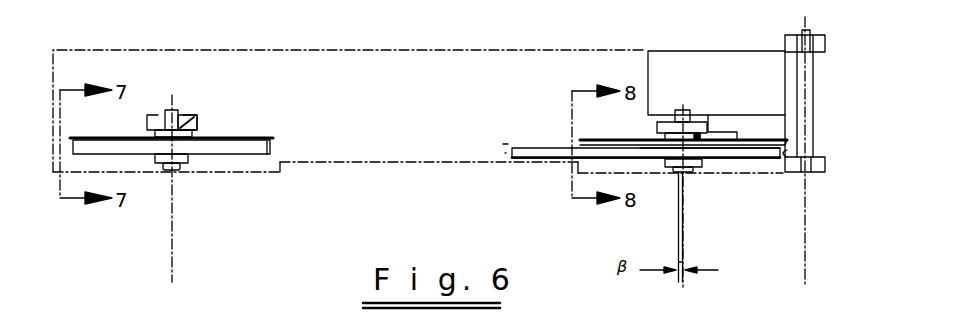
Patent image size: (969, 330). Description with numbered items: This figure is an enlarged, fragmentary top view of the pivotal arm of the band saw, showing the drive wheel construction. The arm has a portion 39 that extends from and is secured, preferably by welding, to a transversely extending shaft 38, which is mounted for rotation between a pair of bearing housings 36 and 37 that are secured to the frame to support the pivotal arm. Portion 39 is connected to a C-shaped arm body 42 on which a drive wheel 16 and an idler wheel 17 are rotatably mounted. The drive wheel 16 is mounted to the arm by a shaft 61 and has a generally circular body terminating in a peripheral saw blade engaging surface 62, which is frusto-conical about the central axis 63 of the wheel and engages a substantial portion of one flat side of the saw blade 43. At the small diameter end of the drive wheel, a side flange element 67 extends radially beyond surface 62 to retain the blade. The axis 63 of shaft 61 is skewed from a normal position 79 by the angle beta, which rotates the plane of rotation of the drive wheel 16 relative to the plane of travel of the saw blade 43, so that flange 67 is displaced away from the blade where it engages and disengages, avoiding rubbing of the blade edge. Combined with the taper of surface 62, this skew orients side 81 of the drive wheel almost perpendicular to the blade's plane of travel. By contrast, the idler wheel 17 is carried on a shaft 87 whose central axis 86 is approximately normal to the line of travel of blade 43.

The drive wheel 16 is at (772, 156).
The idler wheel 17 is at (250, 150).
The bearing housing 36 is at (826, 45).
The bearing housing 37 is at (828, 165).
The shaft 38 is at (811, 108).
The portion of arm 39 is at (766, 88).
The C-shaped arm body 42 is at (600, 49).
The saw blade 43 is at (525, 147).
The shaft 61 is at (697, 115).
The peripheral saw blade engaging surface 62 is at (715, 150).
The central axis 63 is at (678, 233).
The side flange element 67 is at (740, 140).
The normal position 79 is at (686, 252).
The side of the drive wheel 81 is at (788, 160).
The central axis 86 is at (172, 237).
The shaft 87 is at (184, 118).